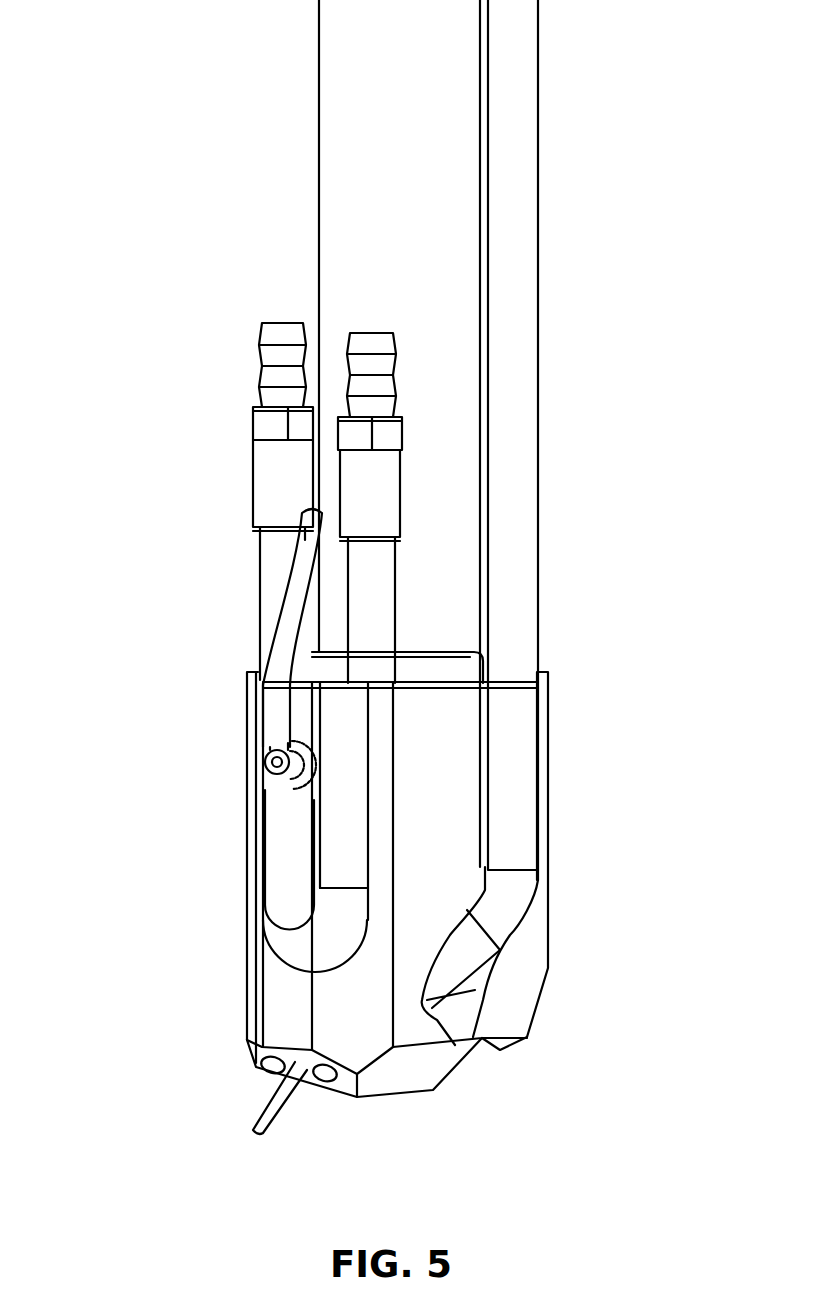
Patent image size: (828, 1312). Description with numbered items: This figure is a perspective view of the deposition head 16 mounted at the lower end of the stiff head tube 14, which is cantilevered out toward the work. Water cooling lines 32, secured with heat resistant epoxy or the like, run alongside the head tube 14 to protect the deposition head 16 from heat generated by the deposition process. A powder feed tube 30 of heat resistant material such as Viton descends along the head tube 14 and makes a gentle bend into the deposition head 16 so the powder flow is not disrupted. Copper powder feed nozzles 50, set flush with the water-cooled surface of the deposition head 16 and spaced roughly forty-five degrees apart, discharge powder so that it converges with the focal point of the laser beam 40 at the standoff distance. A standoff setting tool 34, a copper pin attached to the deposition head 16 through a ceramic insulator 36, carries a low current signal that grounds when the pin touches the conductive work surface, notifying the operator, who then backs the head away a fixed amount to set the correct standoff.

The head tube 14 is at (408, 184).
The deposition head 16 is at (432, 800).
The powder feed tube 30 is at (510, 653).
The water cooling lines 32 is at (270, 475).
The standoff setting tool 34 is at (265, 763).
The ceramic insulator 36 is at (283, 790).
The laser beam 40 is at (243, 1120).
The powder feed nozzles 50 is at (330, 1085).